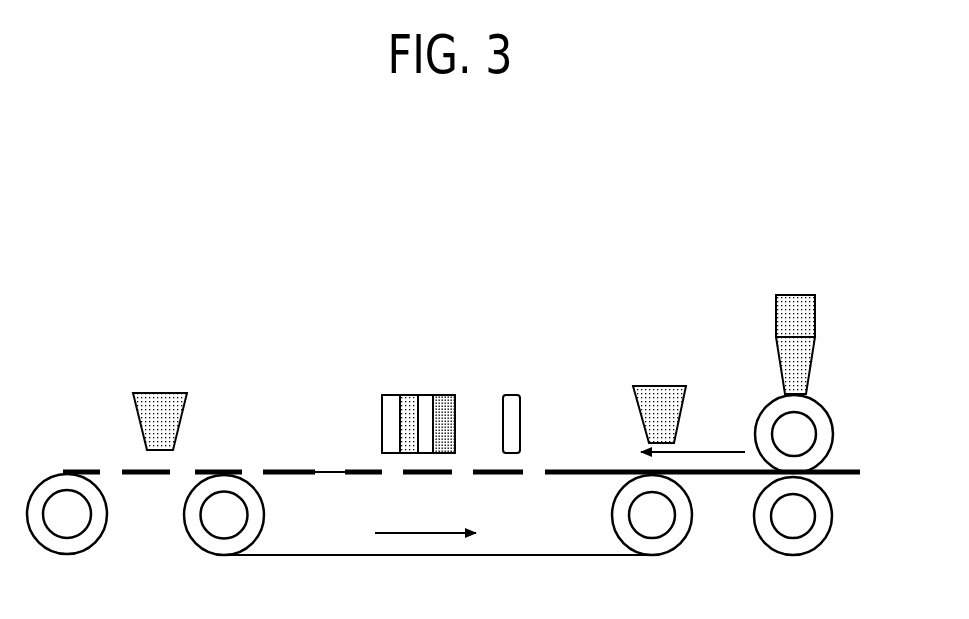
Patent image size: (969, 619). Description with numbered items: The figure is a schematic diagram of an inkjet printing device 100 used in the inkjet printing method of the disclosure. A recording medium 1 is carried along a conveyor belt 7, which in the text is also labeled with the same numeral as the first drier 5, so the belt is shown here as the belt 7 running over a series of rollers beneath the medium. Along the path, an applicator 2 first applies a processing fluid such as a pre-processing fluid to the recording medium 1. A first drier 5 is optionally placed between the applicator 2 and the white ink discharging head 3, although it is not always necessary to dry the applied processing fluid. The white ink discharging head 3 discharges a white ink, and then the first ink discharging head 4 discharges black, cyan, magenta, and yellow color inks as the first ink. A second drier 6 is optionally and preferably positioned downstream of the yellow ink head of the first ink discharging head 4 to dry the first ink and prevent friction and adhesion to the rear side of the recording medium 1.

The inkjet printing device 100 is at (644, 200).
The recording medium 1 is at (846, 477).
The applicator 2 is at (826, 400).
The white ink discharging head 3 is at (512, 395).
The first ink discharging head 4 is at (415, 395).
The first drier 5 is at (663, 386).
The second drier 6 is at (160, 392).
The conveyor belt 7 is at (433, 554).